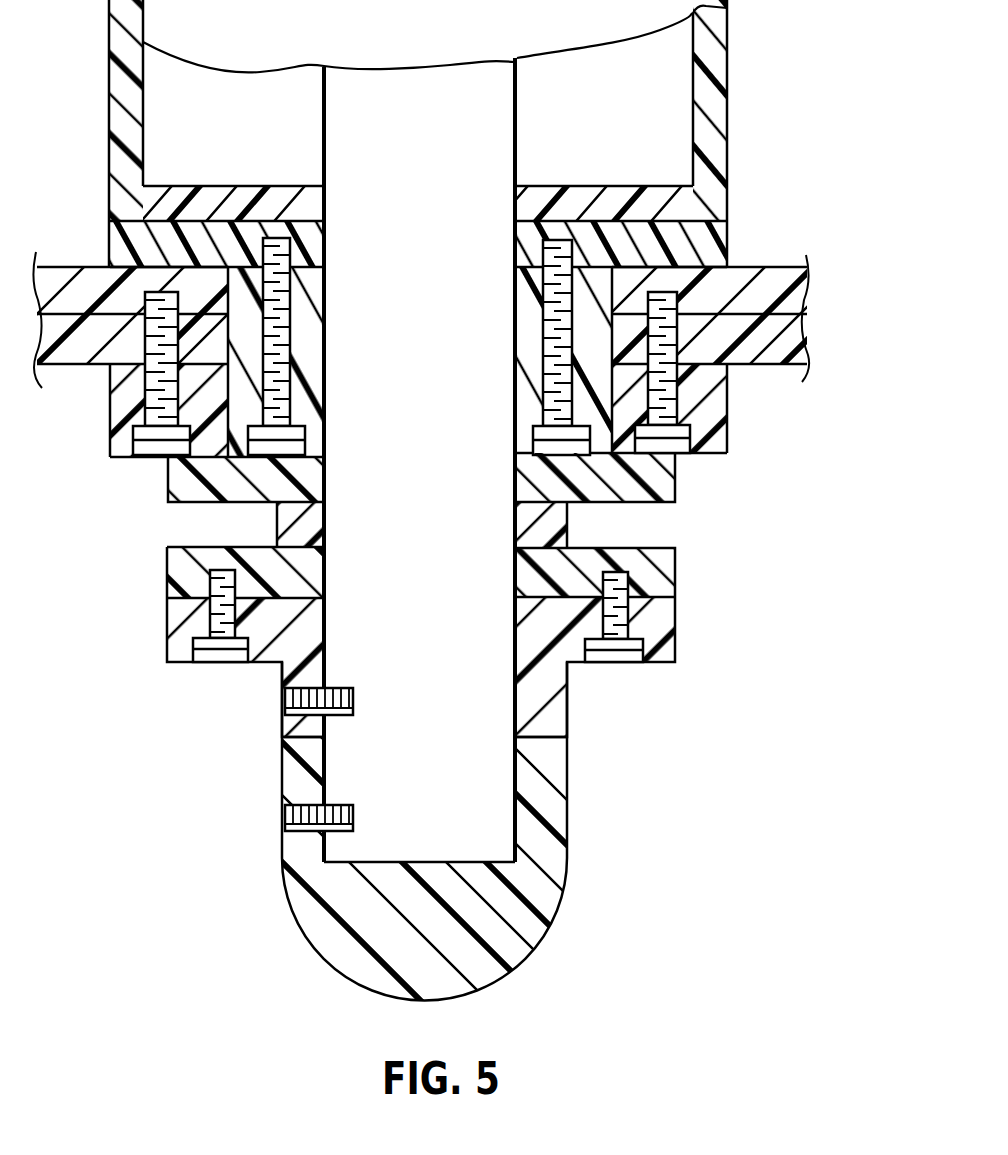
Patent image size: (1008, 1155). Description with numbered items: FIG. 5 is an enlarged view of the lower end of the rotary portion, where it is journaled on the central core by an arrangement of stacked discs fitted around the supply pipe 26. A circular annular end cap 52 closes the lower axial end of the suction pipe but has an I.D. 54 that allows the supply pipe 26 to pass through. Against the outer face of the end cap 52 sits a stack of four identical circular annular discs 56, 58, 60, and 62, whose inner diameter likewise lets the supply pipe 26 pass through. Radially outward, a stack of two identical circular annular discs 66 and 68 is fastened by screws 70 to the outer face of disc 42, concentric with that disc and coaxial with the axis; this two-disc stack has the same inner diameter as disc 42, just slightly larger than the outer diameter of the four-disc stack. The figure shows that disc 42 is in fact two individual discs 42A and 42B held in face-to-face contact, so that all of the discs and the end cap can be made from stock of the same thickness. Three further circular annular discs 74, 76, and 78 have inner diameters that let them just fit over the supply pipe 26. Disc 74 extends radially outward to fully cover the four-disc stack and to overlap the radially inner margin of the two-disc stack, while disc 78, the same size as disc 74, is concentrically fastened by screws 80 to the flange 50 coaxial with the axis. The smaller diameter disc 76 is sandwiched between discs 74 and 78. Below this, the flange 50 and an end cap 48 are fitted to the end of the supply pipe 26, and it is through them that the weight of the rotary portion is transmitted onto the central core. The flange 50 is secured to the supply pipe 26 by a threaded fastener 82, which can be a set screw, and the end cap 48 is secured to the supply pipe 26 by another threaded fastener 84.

The supply pipe 26 is at (477, 133).
The disc 42 is at (447, 307).
The disc 42A is at (773, 283).
The disc 42B is at (765, 347).
The end cap 48 is at (553, 815).
The flange 50 is at (647, 627).
The circular annular end cap 52 is at (640, 184).
The I.D. 54 is at (520, 221).
The circular annular disc 56 is at (597, 283).
The circular annular disc 58 is at (603, 350).
The circular annular disc 60 is at (610, 400).
The circular annular disc 62 is at (610, 420).
The circular annular disc 66 is at (118, 383).
The circular annular disc 68 is at (118, 437).
The screws 70 is at (160, 433).
The circular annular disc 74 is at (665, 490).
The circular annular disc 76 is at (540, 528).
The circular annular disc 78 is at (650, 582).
The screws 80 is at (222, 645).
The threaded fastener 82 is at (283, 703).
The threaded fastener 84 is at (285, 820).